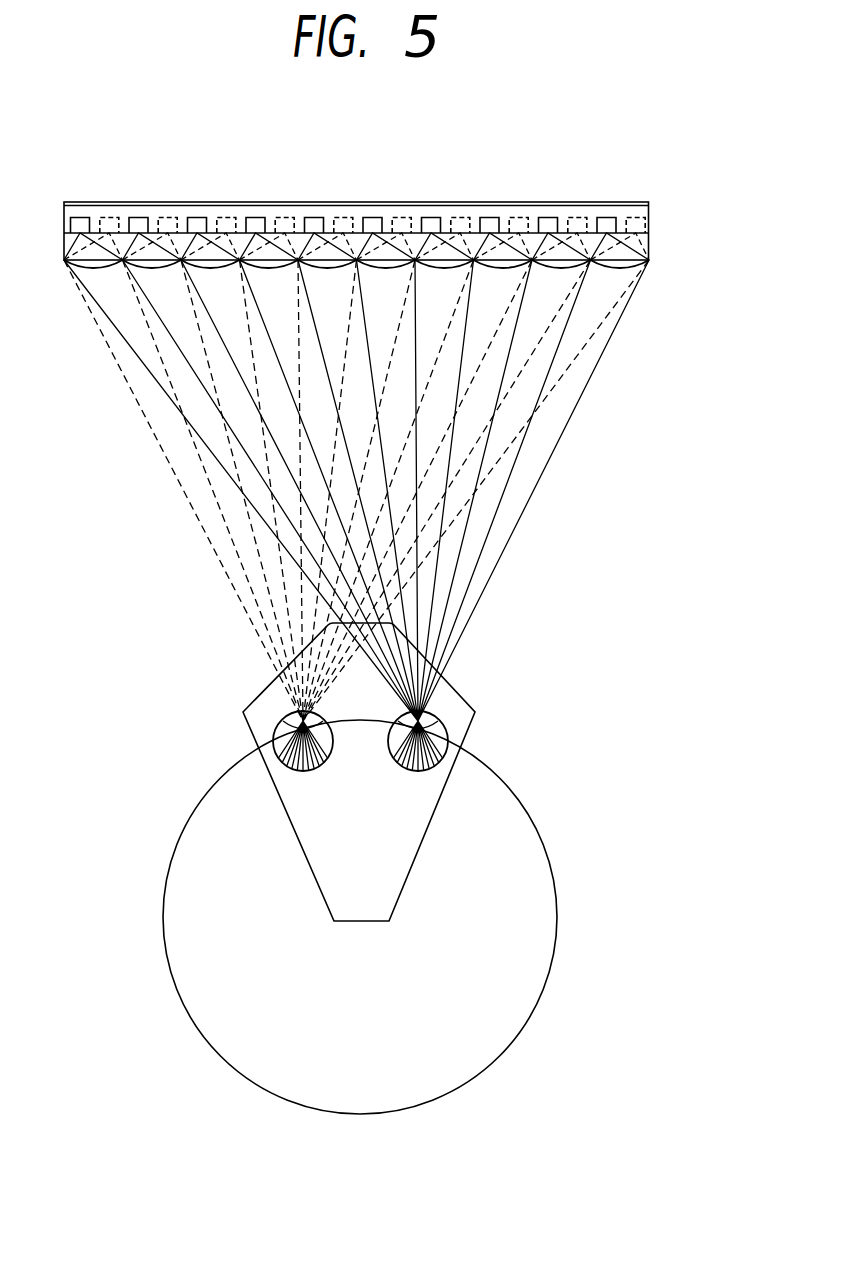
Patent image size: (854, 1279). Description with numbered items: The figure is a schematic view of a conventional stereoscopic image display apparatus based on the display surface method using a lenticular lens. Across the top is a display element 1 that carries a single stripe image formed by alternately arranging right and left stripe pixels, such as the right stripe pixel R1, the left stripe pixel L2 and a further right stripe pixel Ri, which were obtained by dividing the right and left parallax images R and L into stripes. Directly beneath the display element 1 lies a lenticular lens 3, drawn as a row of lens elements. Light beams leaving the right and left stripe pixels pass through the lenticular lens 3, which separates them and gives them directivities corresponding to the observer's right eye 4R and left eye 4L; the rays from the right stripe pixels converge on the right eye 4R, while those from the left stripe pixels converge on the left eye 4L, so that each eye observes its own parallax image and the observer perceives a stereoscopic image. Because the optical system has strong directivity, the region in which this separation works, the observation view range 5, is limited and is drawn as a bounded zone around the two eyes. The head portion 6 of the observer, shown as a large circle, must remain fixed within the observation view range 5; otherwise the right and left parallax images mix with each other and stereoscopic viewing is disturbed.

The display element 1 is at (633, 203).
The lenticular lens 3 is at (640, 243).
The right stripe pixel R1 is at (80, 217).
The left stripe pixel L2 is at (104, 217).
The right stripe pixel Ri is at (313, 217).
The left eye 4L is at (273, 730).
The right eye 4R is at (448, 733).
The observation view range 5 is at (458, 690).
The head portion 6 is at (530, 1015).